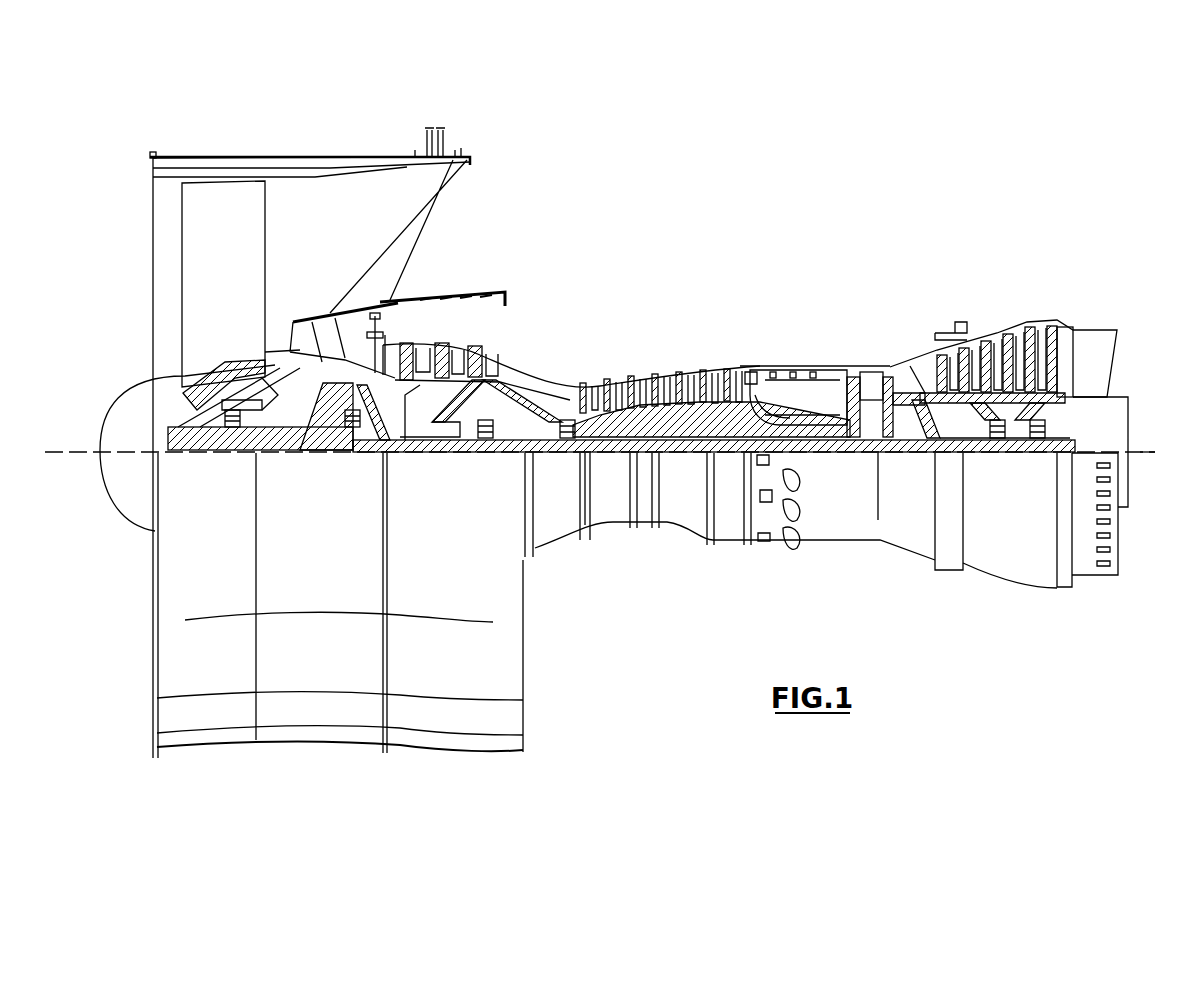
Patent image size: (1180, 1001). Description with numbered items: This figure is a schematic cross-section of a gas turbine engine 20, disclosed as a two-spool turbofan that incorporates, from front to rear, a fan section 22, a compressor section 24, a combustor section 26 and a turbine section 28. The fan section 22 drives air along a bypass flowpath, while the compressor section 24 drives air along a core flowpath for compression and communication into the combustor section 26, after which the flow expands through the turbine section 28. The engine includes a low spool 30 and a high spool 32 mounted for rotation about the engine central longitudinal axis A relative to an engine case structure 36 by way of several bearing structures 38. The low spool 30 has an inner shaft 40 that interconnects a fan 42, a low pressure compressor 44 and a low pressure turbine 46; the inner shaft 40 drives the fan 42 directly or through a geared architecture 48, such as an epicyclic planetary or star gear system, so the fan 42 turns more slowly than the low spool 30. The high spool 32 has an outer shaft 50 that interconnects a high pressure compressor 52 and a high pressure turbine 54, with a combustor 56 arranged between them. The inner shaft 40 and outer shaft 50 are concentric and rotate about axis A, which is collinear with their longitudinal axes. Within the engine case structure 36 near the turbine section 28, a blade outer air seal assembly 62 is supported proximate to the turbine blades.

The gas turbine engine 20 is at (893, 205).
The fan section 22 is at (380, 111).
The compressor section 24 is at (390, 263).
The combustor section 26 is at (853, 263).
The turbine section 28 is at (1063, 263).
The low spool 30 is at (687, 463).
The high spool 32 is at (732, 372).
The engine case structure 36 is at (727, 548).
The bearing structures 38 is at (412, 507).
The inner shaft 40 is at (540, 455).
The fan 42 is at (237, 293).
The low pressure compressor 44 is at (462, 350).
The low pressure turbine 46 is at (1003, 337).
The geared architecture 48 is at (345, 437).
The outer shaft 50 is at (810, 453).
The high pressure compressor 52 is at (657, 380).
The high pressure turbine 54 is at (877, 372).
The combustor 56 is at (803, 393).
The blade outer air seal assembly 62 is at (598, 527).
The engine central longitudinal axis A is at (1157, 451).